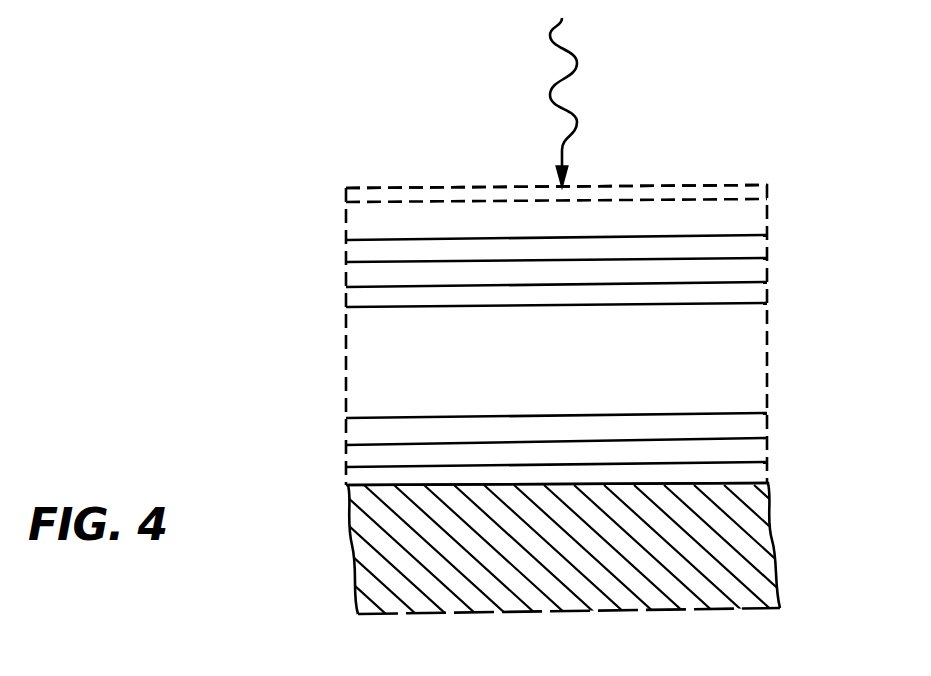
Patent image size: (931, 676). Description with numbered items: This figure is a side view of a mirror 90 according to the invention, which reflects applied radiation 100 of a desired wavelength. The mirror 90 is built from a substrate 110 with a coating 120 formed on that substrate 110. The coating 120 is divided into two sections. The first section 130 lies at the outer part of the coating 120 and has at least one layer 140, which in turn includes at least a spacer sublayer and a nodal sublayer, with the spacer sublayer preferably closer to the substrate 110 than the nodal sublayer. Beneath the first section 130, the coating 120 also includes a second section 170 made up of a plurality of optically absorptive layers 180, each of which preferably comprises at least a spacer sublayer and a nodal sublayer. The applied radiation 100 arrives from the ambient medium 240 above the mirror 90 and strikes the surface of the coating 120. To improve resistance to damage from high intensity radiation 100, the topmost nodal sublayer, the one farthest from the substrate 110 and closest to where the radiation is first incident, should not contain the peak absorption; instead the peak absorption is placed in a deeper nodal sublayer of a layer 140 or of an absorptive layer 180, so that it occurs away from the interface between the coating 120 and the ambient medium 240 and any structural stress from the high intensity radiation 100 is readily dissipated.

The mirror 90 is at (170, 330).
The applied radiation 100 is at (570, 117).
The substrate 110 is at (752, 527).
The coating 120 is at (783, 182).
The first section 130 is at (343, 188).
The layer 140 is at (686, 216).
The second section 170 is at (343, 253).
The optically absorptive layer 180 is at (731, 285).
The ambient medium 240 is at (678, 163).